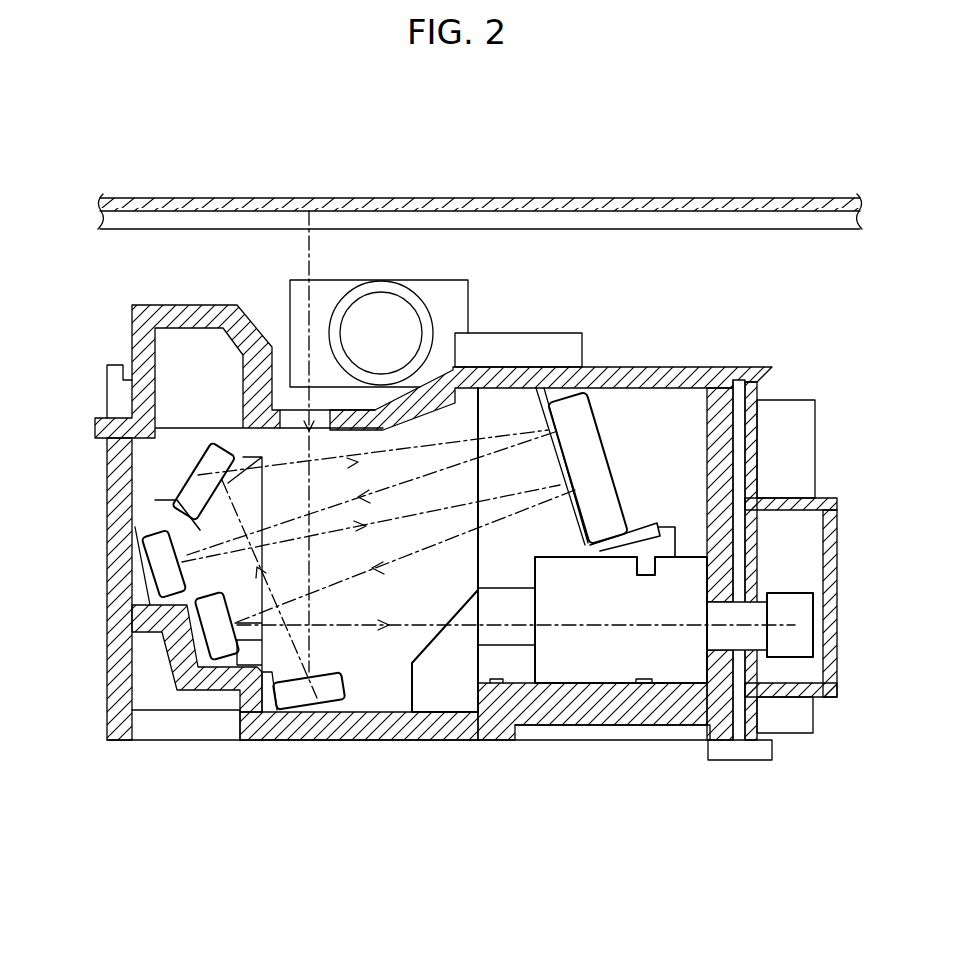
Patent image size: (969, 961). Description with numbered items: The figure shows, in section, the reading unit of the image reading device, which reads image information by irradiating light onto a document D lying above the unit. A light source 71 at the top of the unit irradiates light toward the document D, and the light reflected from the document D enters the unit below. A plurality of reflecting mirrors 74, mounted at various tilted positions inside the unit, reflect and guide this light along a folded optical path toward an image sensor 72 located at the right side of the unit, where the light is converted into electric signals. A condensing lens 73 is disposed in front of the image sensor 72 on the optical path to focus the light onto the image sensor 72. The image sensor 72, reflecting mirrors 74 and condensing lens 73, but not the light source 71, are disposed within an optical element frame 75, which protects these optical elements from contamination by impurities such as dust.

The document D is at (577, 200).
The light source 71 is at (408, 320).
The image sensor 72 is at (792, 600).
The condensing lens 73 is at (608, 675).
The reflecting mirrors 74 is at (198, 475).
The optical element frame 75 is at (107, 682).